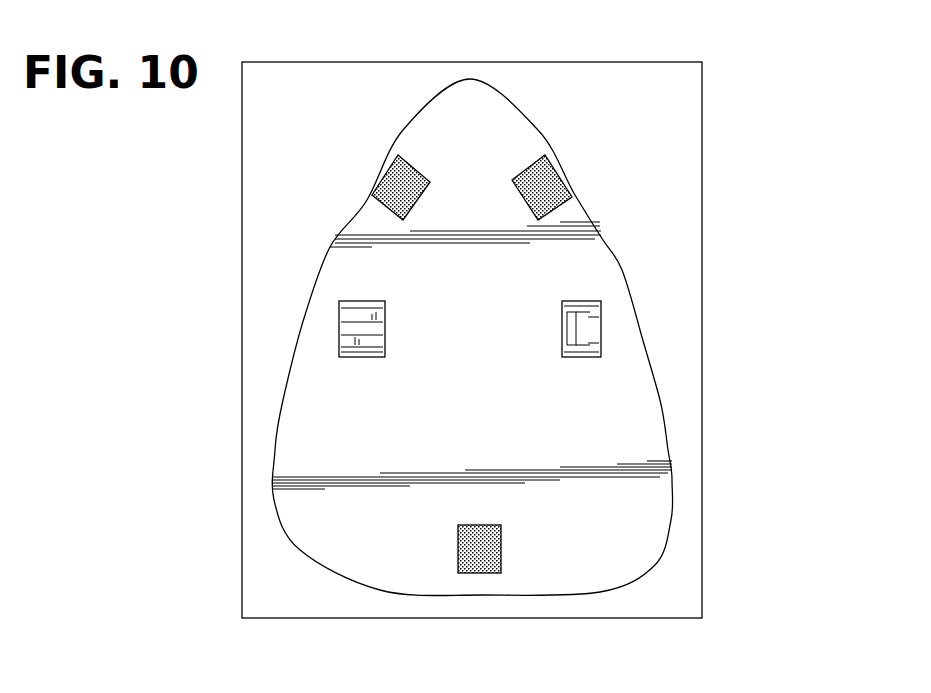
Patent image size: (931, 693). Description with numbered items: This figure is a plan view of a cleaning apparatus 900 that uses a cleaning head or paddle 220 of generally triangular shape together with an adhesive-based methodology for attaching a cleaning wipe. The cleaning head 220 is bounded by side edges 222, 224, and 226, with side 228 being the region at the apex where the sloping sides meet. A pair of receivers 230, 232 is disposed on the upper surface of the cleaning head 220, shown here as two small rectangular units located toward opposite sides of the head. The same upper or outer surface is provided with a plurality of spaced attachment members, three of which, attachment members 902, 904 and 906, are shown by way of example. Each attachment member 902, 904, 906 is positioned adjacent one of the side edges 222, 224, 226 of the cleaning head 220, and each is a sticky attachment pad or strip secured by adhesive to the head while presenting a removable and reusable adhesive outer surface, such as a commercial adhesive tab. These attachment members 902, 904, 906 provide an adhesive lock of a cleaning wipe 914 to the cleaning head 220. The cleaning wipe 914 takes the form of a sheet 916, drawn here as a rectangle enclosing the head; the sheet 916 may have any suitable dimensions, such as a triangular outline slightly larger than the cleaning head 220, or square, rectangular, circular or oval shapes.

The cleaning wipe 914 is at (710, 89).
The sheet 916 is at (690, 165).
The cleaning apparatus 900 is at (678, 243).
The cleaning head 220 is at (318, 427).
The side 228 is at (470, 77).
The side edge 224 is at (331, 247).
The side edge 226 is at (672, 488).
The side edge 222 is at (418, 594).
The attachment member 902 is at (388, 178).
The attachment member 906 is at (553, 190).
The attachment member 904 is at (502, 552).
The receiver 232 is at (332, 326).
The receiver 230 is at (612, 328).